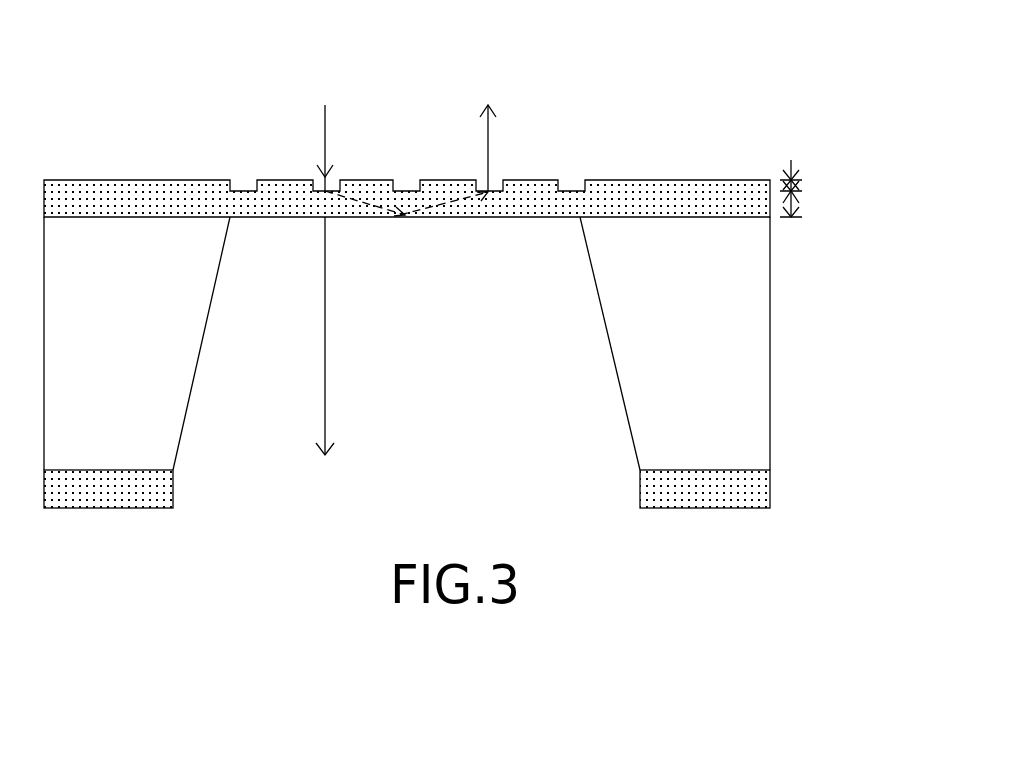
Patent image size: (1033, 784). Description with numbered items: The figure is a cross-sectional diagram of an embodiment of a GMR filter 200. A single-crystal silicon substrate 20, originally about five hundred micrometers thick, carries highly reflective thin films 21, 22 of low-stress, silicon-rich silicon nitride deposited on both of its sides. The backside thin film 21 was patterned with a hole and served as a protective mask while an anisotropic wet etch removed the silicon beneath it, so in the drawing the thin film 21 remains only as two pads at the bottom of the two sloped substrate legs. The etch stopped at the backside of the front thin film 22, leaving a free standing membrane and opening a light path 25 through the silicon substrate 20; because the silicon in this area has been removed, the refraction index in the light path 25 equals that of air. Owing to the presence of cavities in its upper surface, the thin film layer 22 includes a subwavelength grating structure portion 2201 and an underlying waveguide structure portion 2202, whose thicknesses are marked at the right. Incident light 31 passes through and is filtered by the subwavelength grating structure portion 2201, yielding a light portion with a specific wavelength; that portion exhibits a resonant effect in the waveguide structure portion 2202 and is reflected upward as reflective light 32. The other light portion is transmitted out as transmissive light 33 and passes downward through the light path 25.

The GMR filter 200 is at (792, 35).
The single-crystal silicon substrate 20 is at (747, 410).
The highly reflective thin film 21 is at (113, 492).
The highly reflective thin film 22 is at (155, 193).
The subwavelength grating structure portion 2201 is at (802, 182).
The waveguide structure portion 2202 is at (802, 200).
The light path 25 is at (424, 352).
The incident light 31 is at (325, 145).
The reflective light 32 is at (488, 145).
The transmissive light 33 is at (327, 290).